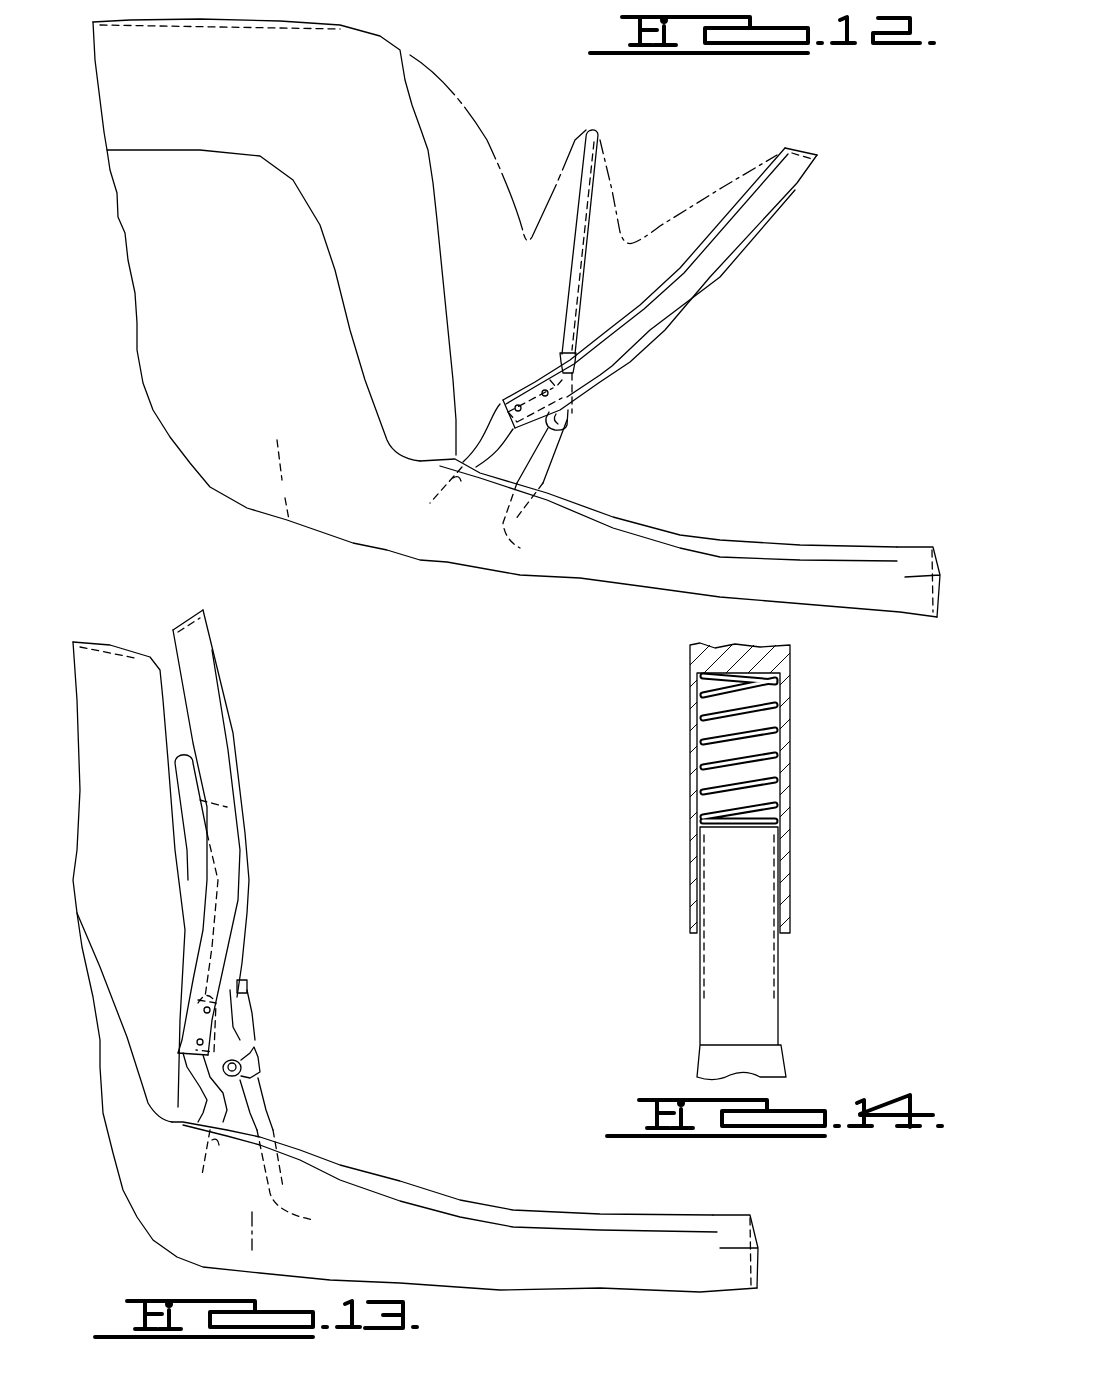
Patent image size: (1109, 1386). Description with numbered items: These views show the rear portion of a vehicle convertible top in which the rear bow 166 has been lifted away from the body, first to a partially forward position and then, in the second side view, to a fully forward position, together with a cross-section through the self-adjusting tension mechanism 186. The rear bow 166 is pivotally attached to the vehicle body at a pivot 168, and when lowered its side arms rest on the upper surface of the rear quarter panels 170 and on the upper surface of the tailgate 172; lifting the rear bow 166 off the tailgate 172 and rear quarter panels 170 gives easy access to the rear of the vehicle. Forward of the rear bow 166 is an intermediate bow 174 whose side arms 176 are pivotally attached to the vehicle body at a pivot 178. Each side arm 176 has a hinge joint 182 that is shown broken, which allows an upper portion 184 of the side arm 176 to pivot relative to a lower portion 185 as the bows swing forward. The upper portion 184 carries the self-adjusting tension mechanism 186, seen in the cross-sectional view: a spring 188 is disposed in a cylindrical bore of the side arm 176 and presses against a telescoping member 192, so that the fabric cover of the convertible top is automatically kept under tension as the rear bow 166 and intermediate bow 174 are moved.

In FIG. 12, the rear bow 166 is at (727, 248).
In FIG. 13, the rear bow 166 is at (212, 742).
In FIG. 12, the pivot 168 is at (432, 500).
In FIG. 13, the pivot 168 is at (205, 1170).
In FIG. 12, the rear quarter panels 170 is at (787, 588).
In FIG. 13, the rear quarter panels 170 is at (560, 1270).
In FIG. 12, the tailgate 172 is at (947, 607).
In FIG. 13, the tailgate 172 is at (758, 1267).
In FIG. 12, the intermediate bow 174 is at (590, 126).
In FIG. 13, the intermediate bow 174 is at (193, 815).
In FIG. 12, the side arms 176 is at (560, 347).
In FIG. 12, the pivot 178 is at (520, 544).
In FIG. 13, the pivot 178 is at (314, 1184).
In FIG. 12, the hinge joint 182 is at (568, 413).
In FIG. 13, the hinge joint 182 is at (250, 1047).
In FIG. 12, the upper portion 184 is at (568, 290).
In FIG. 13, the upper portion 184 is at (203, 872).
In FIG. 12, the lower portion 185 is at (540, 463).
In FIG. 13, the lower portion 185 is at (263, 1113).
In FIG. 12, the self-adjusting tension mechanism 186 is at (548, 359).
In FIG. 13, the self-adjusting tension mechanism 186 is at (206, 1024).
In FIG. 14, the self-adjusting tension mechanism 186 is at (668, 823).
In FIG. 14, the spring 188 is at (727, 760).
In FIG. 14, the telescoping member 192 is at (760, 868).